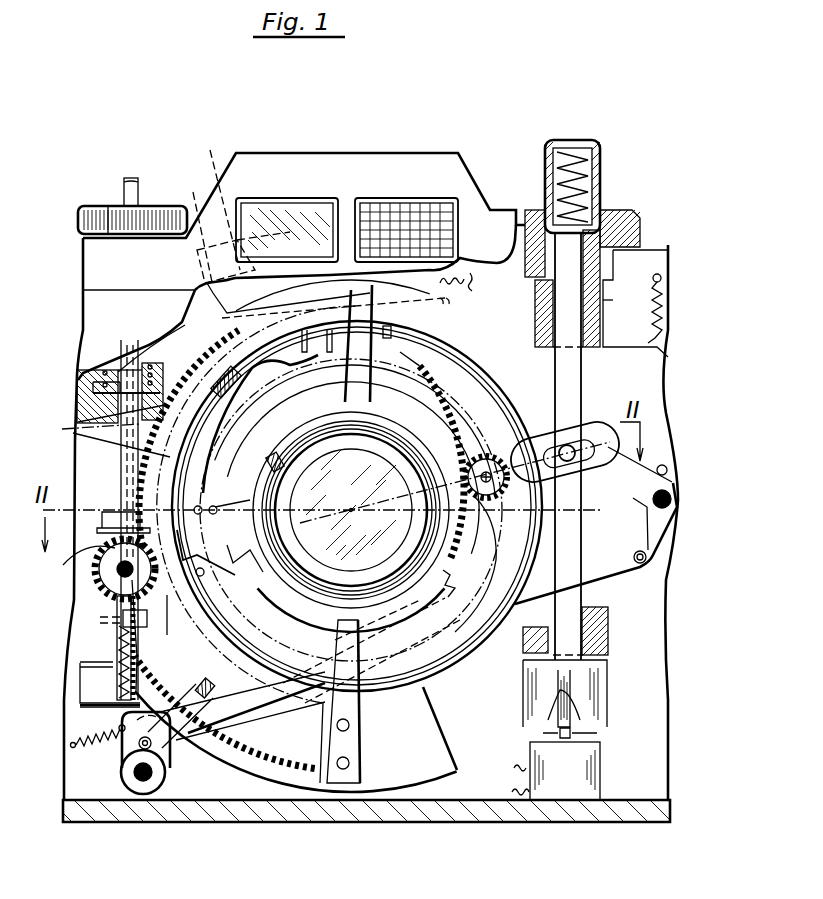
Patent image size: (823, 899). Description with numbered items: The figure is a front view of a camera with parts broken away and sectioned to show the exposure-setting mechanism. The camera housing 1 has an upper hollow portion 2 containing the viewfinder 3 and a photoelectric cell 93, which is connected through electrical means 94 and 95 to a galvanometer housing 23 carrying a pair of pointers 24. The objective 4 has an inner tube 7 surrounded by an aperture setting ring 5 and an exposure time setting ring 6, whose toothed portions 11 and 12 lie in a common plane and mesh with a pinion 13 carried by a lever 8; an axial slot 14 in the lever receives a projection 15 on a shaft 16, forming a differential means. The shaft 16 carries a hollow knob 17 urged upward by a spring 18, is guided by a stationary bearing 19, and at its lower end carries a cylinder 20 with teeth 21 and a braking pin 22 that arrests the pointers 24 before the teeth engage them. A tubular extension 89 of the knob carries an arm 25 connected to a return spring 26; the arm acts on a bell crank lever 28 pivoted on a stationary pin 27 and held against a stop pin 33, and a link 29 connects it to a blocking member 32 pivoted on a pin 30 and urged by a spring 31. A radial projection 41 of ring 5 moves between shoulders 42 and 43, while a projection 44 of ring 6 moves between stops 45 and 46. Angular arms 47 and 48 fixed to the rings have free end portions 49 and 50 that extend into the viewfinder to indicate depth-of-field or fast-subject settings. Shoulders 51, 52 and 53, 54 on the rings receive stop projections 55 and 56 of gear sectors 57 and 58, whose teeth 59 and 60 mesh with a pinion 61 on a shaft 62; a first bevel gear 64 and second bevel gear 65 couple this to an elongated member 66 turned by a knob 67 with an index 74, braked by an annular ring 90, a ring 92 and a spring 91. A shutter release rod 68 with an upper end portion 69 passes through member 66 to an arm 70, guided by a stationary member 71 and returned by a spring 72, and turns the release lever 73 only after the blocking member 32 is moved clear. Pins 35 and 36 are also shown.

The camera housing 1 is at (601, 823).
The upper hollow portion 2 is at (499, 208).
The viewfinder 3 is at (317, 200).
The objective 4 is at (385, 458).
The aperture setting ring 5 is at (302, 606).
The exposure time setting ring 6 is at (494, 552).
The inner tube 7 is at (286, 596).
The lever 8 is at (480, 456).
The teeth 11 is at (458, 610).
The teeth 12 is at (446, 408).
The pinion 13 is at (487, 495).
The axial slot 14 is at (592, 440).
The projection 15 is at (556, 440).
The shaft 16 is at (581, 368).
The hollow knob 17 is at (600, 158).
The spring 18 is at (568, 175).
The stationary bearing 19 is at (608, 620).
The cylinder 20 is at (596, 668).
The teeth 21 is at (582, 704).
The braking pin 22 is at (556, 700).
The galvanometer housing 23 is at (590, 765).
The pointers 24 is at (548, 733).
The arm 25 is at (622, 346).
The spring 26 is at (670, 305).
The stationary pin 27 is at (671, 506).
The bell crank lever 28 is at (633, 490).
The link 29 is at (618, 568).
The stationary pin 30 is at (146, 782).
The spring 31 is at (108, 746).
The blocking member 32 is at (166, 772).
The stationary stop pin 33 is at (668, 466).
The pin 35 is at (198, 505).
The pin 36 is at (213, 515).
The radial projection 41 is at (290, 448).
The shoulder 42 is at (233, 497).
The shoulder 43 is at (339, 430).
The radial projection 44 is at (392, 333).
The stop 45 is at (378, 333).
The stop 46 is at (496, 390).
The angular arm 47 is at (374, 302).
The angular arm 48 is at (235, 330).
The free end portion 49 is at (219, 198).
The free end portion 50 is at (234, 226).
The shoulder 51 is at (246, 570).
The shoulder 52 is at (362, 626).
The shoulder 53 is at (246, 380).
The shoulder 54 is at (234, 552).
The stop projection 55 is at (338, 641).
The stop projection 56 is at (268, 452).
The gear sector 57 is at (396, 775).
The gear sector 58 is at (140, 453).
The internal teeth 59 is at (150, 668).
The gear sector 60 is at (166, 636).
The pinion 61 is at (112, 579).
The shaft 62 is at (100, 619).
The first bevel gear 64 is at (75, 562).
The second bevel gear 65 is at (106, 513).
The elongated member 66 is at (114, 376).
The knob 67 is at (86, 216).
The shutter release rod 68 is at (64, 431).
The upper free end portion 69 is at (133, 190).
The arm 70 is at (110, 685).
The stationary member 71 is at (82, 662).
The spring 72 is at (80, 667).
The lever 73 is at (214, 693).
The index 74 is at (109, 207).
The tubular extension 89 is at (615, 300).
The annular ring 90 is at (100, 398).
The spring 91 is at (157, 355).
The ring 92 is at (135, 358).
The photoelectric cell 93 is at (375, 204).
The electrical means 94 is at (447, 292).
The electrical means 95 is at (458, 278).